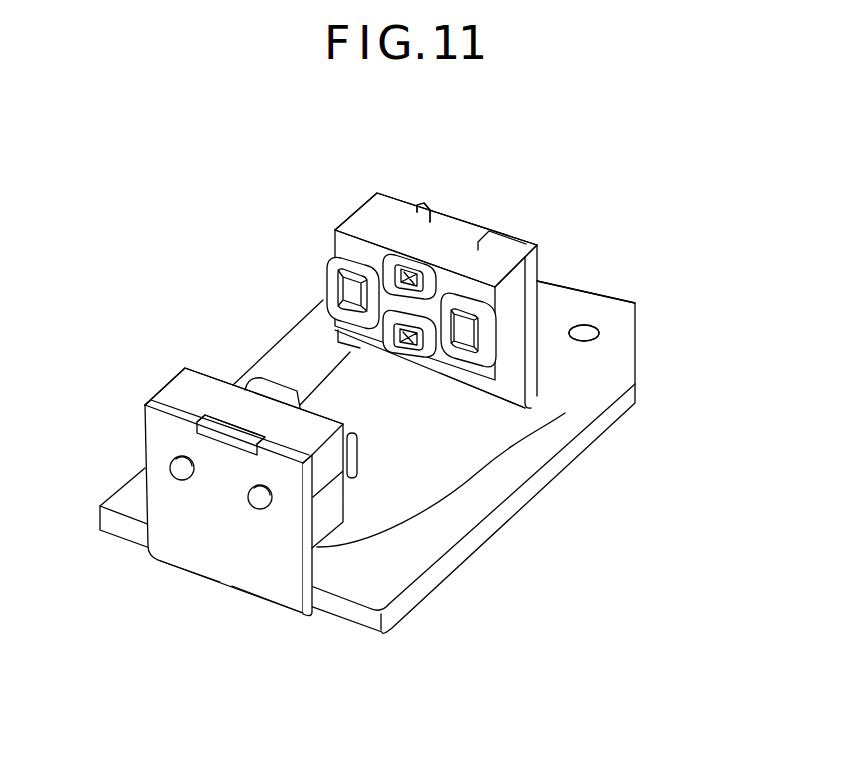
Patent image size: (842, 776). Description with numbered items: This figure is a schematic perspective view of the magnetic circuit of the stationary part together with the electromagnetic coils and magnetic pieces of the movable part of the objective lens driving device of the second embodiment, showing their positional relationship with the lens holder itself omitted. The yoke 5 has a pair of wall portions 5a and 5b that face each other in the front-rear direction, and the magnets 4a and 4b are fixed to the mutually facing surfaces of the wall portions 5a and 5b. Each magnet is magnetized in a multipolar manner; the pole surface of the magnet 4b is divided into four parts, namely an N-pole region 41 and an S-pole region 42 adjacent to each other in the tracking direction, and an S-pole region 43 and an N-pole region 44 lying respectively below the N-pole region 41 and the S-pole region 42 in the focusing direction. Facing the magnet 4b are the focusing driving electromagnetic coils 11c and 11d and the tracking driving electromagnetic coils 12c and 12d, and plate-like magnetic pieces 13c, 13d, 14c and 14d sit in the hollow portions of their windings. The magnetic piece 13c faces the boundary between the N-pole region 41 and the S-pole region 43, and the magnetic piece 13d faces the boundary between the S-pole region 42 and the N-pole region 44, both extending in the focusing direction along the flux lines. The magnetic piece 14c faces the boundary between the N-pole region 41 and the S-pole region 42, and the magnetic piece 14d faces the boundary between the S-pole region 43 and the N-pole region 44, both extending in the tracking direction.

The magnet 4a is at (200, 392).
The magnet 4b is at (377, 222).
The yoke 5 is at (587, 447).
The wall portion 5a is at (207, 535).
The wall portion 5b is at (530, 322).
The focusing driving electromagnetic coil 11c is at (487, 340).
The focusing driving electromagnetic coil 11d is at (330, 278).
The tracking driving electromagnetic coil 12c is at (405, 253).
The tracking driving electromagnetic coil 12d is at (423, 368).
The magnetic piece 13c is at (475, 330).
The magnetic piece 13d is at (346, 294).
The magnetic piece 14c is at (408, 278).
The magnetic piece 14d is at (403, 351).
The N-pole region 41 is at (493, 263).
The S-pole region 42 is at (445, 243).
The S-pole region 43 is at (537, 373).
The N-pole region 44 is at (352, 337).